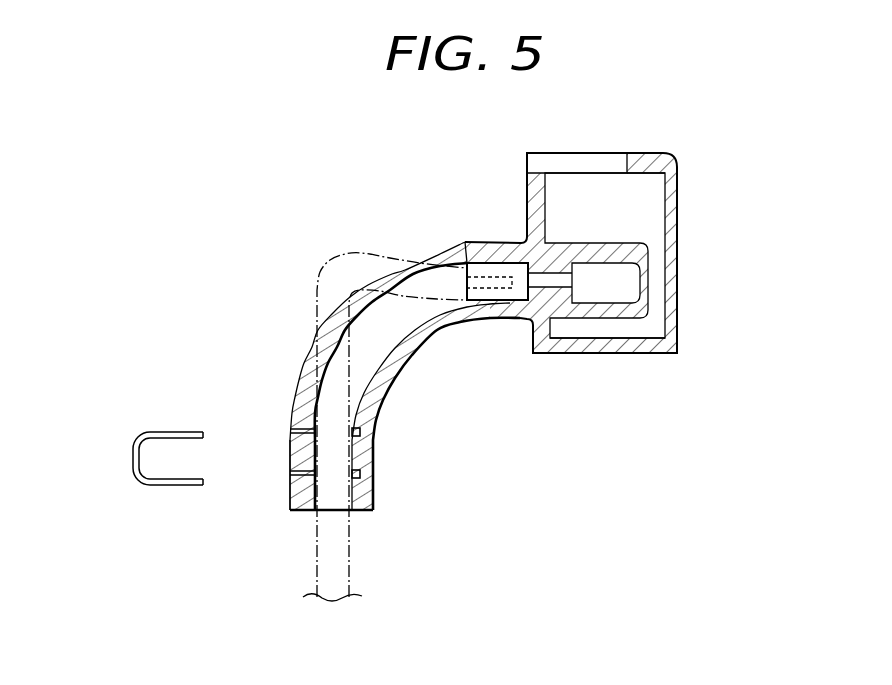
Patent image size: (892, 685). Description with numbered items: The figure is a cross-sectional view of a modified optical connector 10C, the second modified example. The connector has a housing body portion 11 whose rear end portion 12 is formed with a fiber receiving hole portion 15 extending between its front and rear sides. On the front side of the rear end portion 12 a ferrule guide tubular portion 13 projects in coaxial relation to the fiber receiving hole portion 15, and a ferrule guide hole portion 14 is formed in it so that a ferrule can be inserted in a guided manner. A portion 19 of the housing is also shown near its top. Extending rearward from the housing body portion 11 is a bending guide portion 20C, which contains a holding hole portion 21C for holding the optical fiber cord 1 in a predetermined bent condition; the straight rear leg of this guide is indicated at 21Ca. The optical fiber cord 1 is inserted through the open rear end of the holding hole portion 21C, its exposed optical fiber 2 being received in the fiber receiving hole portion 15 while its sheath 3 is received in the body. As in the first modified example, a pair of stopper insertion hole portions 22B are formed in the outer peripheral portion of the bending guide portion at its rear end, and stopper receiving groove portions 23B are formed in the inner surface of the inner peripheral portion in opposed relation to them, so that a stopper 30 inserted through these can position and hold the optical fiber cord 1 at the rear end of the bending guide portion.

The optical fiber cord 1 is at (360, 552).
The optical fiber 2 is at (345, 490).
The sheath 3 is at (498, 300).
The modified optical connector 10C is at (460, 299).
The housing body portion 11 is at (632, 353).
The rear end portion 12 is at (527, 190).
The ferrule guide tubular portion 13 is at (595, 243).
The ferrule guide hole portion 14 is at (633, 270).
The fiber receiving hole portion 15 is at (578, 283).
The top wall portion 19 is at (617, 165).
The bending guide portion 20C is at (380, 385).
The holding hole portion 21C is at (415, 330).
The straight tube portion 21Ca is at (300, 372).
The stopper insertion hole portions 22B is at (290, 470).
The stopper receiving groove portions 23B is at (362, 476).
The stopper 30 is at (132, 445).